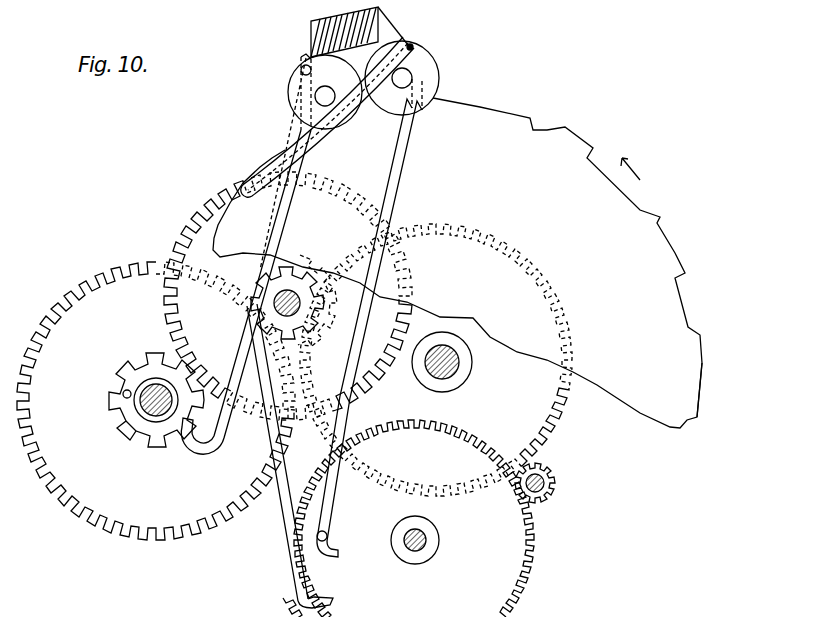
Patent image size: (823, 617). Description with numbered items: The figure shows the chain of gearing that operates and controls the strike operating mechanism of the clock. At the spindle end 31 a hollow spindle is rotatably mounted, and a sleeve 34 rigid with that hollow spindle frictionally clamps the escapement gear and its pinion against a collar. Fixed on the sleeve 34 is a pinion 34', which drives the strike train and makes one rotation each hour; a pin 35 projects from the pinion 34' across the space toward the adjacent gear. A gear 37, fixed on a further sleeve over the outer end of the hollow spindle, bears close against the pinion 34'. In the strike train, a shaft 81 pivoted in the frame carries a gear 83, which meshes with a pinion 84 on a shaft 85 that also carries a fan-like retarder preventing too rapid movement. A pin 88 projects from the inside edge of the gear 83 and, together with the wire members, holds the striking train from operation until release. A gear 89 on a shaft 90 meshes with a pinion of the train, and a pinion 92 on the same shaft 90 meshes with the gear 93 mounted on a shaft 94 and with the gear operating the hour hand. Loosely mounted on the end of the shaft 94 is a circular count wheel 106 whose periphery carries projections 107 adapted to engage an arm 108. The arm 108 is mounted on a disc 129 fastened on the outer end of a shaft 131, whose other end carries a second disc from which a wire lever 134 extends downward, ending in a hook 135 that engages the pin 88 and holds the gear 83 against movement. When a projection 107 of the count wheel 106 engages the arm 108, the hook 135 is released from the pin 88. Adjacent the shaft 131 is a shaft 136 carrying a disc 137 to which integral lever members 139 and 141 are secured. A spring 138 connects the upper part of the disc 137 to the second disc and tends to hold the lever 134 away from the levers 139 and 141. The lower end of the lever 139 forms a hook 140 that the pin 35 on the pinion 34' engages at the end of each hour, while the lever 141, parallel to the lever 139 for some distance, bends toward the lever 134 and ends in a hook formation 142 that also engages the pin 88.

The spindle end 31 is at (155, 378).
The sleeve 34 is at (145, 394).
The pinion 34' is at (118, 447).
The pin 35 is at (122, 395).
The gear 37 is at (110, 275).
The shaft 81 is at (430, 540).
The gear 83 is at (534, 548).
The pinion 84 is at (553, 478).
The shaft 85 is at (551, 493).
The pin 88 is at (325, 531).
The gear 89 is at (213, 227).
The shaft 90 is at (288, 288).
The pinion 92 is at (350, 259).
The gear 93 is at (572, 412).
The shaft 94 is at (460, 363).
The count wheel 106 is at (653, 240).
The projections 107 is at (680, 253).
The arm 108 is at (272, 168).
The disc 129 is at (439, 75).
The shaft 131 is at (410, 81).
The lever 134 is at (404, 157).
The hook 135 is at (333, 552).
The shaft 136 is at (320, 97).
The disc 137 is at (289, 82).
The spring 138 is at (311, 24).
The lever member 139 is at (238, 348).
The hook 140 is at (201, 455).
The lever 141 is at (283, 525).
The hook formation 142 is at (307, 596).